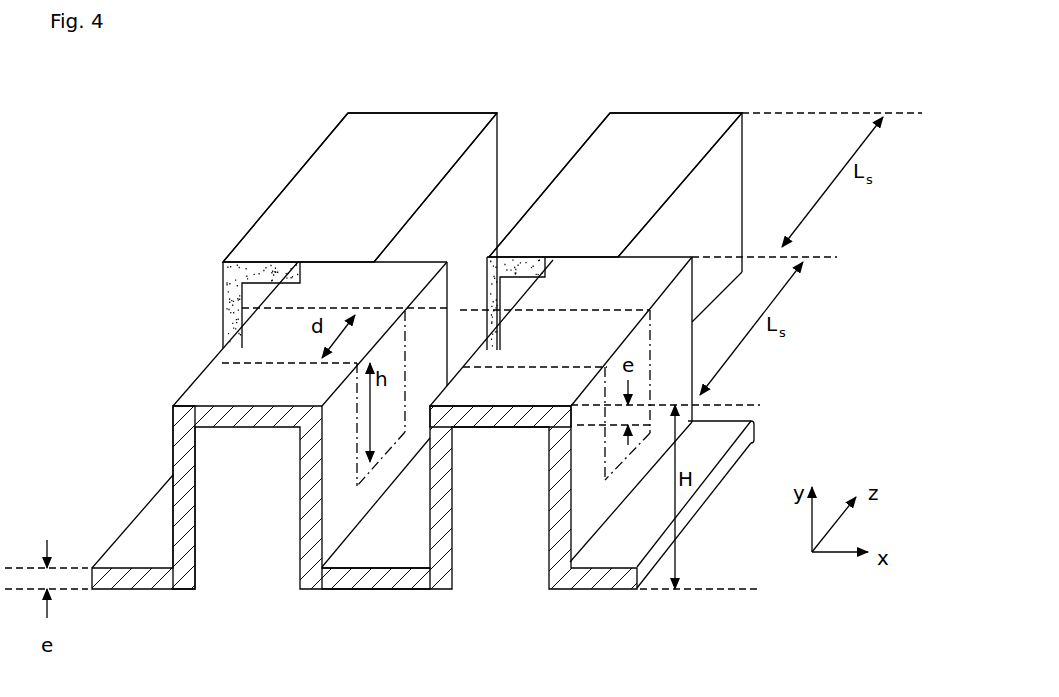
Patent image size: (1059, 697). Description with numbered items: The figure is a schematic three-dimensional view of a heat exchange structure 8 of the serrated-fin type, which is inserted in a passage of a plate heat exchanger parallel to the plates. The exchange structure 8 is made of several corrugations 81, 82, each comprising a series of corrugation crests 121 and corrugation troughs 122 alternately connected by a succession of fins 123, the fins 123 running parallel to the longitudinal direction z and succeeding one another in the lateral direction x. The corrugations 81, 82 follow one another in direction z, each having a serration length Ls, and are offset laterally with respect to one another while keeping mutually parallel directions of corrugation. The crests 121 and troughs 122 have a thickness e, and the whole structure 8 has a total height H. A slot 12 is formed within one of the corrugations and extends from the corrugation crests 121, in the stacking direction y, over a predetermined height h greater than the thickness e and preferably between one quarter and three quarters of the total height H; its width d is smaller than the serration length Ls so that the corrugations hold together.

The heat exchange structure 8 is at (147, 98).
The corrugation 81 is at (200, 391).
The corrugation 82 is at (337, 144).
The slot 12 is at (530, 330).
The corrugation crest 121 is at (643, 192).
The corrugation trough 122 is at (419, 544).
The fin 123 is at (471, 240).